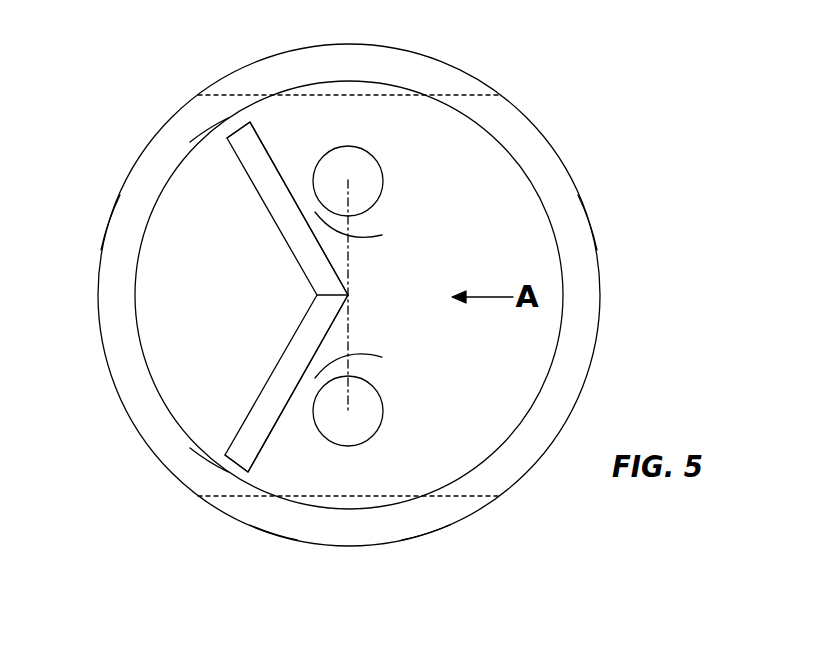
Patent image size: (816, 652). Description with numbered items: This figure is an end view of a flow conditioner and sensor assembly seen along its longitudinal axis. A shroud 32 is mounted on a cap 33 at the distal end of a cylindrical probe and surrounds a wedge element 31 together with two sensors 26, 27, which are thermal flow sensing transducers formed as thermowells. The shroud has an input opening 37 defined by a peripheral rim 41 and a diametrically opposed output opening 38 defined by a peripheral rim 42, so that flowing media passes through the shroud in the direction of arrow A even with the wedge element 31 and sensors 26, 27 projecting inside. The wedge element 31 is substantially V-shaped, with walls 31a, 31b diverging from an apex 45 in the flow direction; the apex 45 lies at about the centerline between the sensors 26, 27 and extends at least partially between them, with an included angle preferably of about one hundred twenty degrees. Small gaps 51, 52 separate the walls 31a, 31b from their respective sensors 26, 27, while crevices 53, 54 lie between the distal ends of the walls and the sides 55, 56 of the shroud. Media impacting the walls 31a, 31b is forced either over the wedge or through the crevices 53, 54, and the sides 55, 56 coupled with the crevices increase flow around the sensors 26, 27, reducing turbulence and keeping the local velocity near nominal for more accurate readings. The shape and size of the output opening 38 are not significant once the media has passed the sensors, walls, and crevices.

The sensor 26 is at (385, 410).
The sensor 27 is at (385, 182).
The wedge element 31 is at (293, 358).
The wall 31a is at (265, 447).
The wall 31b is at (265, 147).
The shroud 32 is at (402, 533).
The cap 33 is at (489, 250).
The input opening 37 is at (580, 193).
The output opening 38 is at (122, 193).
The peripheral rim 41 is at (473, 80).
The peripheral rim 42 is at (230, 82).
The apex 45 is at (350, 296).
The gap 51 is at (382, 357).
The gap 52 is at (382, 235).
The crevice 53 is at (227, 485).
The crevice 54 is at (228, 108).
The side 55 is at (297, 533).
The side 56 is at (403, 52).